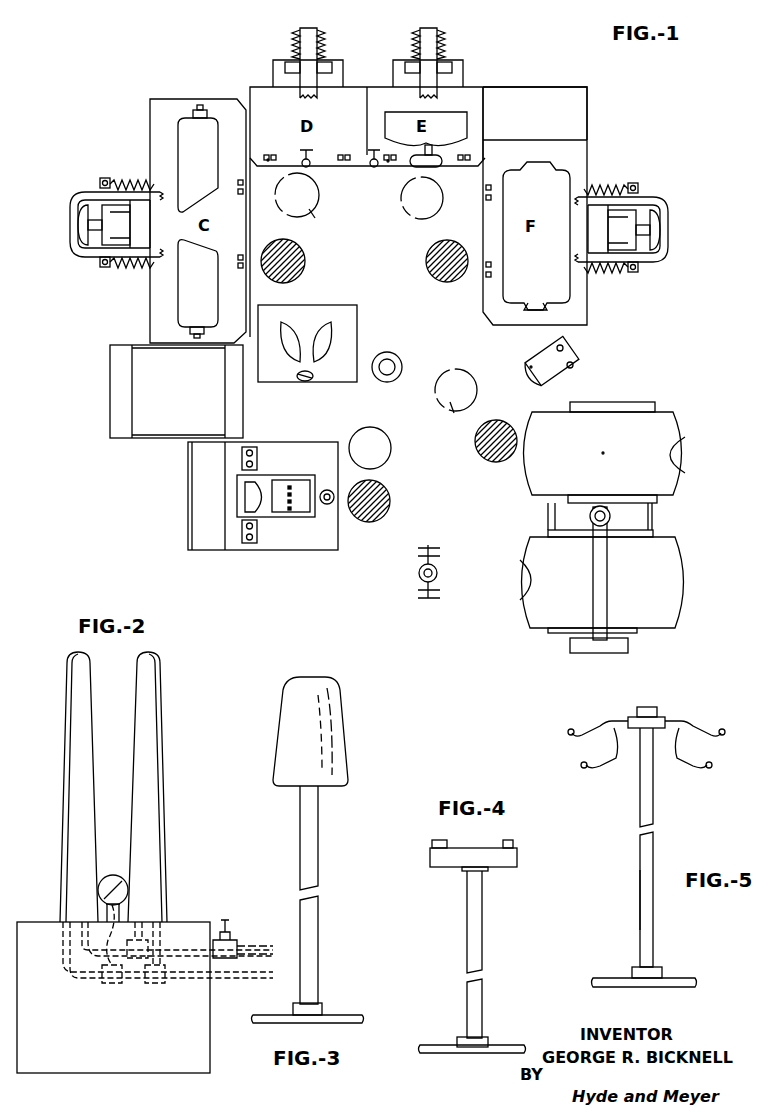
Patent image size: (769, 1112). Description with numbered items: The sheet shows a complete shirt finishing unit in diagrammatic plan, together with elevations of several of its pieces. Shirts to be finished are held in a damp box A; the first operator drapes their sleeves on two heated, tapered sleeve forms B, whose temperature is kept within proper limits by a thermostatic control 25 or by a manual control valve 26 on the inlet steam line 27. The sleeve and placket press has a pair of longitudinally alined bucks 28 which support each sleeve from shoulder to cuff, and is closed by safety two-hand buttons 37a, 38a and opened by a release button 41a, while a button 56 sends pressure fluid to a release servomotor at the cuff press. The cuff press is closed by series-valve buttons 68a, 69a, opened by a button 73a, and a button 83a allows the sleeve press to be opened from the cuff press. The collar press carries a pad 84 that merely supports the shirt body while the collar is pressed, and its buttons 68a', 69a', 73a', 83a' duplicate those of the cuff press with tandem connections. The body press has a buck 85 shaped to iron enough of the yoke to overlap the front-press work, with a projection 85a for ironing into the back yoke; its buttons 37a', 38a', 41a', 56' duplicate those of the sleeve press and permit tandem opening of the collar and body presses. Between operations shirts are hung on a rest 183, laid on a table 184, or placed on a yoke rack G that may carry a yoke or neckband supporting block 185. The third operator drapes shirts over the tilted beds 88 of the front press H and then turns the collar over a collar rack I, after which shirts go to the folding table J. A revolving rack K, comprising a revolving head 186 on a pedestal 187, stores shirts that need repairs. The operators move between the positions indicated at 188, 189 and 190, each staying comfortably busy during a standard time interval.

In FIG. 1, the bucks 28 is at (198, 221).
In FIG. 1, the release button 41a is at (212, 176).
In FIG. 1, the button 37a is at (212, 191).
In FIG. 1, the button 38a is at (263, 240).
In FIG. 1, the button 56 is at (261, 283).
In FIG. 1, the button 83a is at (229, 116).
In FIG. 1, the button 69a is at (269, 175).
In FIG. 1, the button 68a is at (336, 173).
In FIG. 1, the rest 183 is at (366, 153).
In FIG. 1, the button 73a is at (379, 171).
In FIG. 1, the button 83a' is at (392, 125).
In FIG. 1, the button 69a' is at (380, 184).
In FIG. 1, the button 68a' is at (462, 168).
In FIG. 1, the pad 84 is at (428, 168).
In FIG. 1, the button 73a' is at (509, 125).
In FIG. 1, the table 184 is at (517, 98).
In FIG. 1, the tandem control button 56' is at (515, 184).
In FIG. 1, the button 38a' is at (521, 200).
In FIG. 1, the button 37a' is at (464, 244).
In FIG. 1, the release button 41a' is at (464, 291).
In FIG. 1, the operator positions 188 is at (302, 250).
In FIG. 1, the operator positions 189 is at (412, 222).
In FIG. 1, the buck 85 is at (536, 236).
In FIG. 1, the projection 85a is at (547, 311).
In FIG. 1, the thermostatic control 25 is at (304, 382).
In FIG. 2, the thermostatic control 25 is at (110, 873).
In FIG. 1, the yoke or neckband supporting block 185 is at (528, 365).
In FIG. 1, the operator positions 190 is at (477, 438).
In FIG. 1, the tilted beds 88 is at (670, 545).
In FIG. 2, the manual control valve 26 is at (218, 920).
In FIG. 2, the inlet steam line 27 is at (244, 944).
In FIG. 5, the revolving head 186 is at (608, 770).
In FIG. 5, the pedestal 187 is at (638, 898).
In FIG. 1, the damp box A is at (176, 391).
In FIG. 1, the sleeve forms B is at (307, 343).
In FIG. 2, the sleeve forms B is at (168, 819).
In FIG. 1, the yoke rack G is at (560, 362).
In FIG. 4, the yoke rack G is at (492, 955).
In FIG. 1, the front press H is at (603, 455).
In FIG. 1, the collar rack I is at (391, 367).
In FIG. 3, the collar rack I is at (337, 828).
In FIG. 1, the folding table J is at (263, 496).
In FIG. 1, the revolving rack K is at (441, 571).
In FIG. 5, the revolving rack K is at (648, 847).